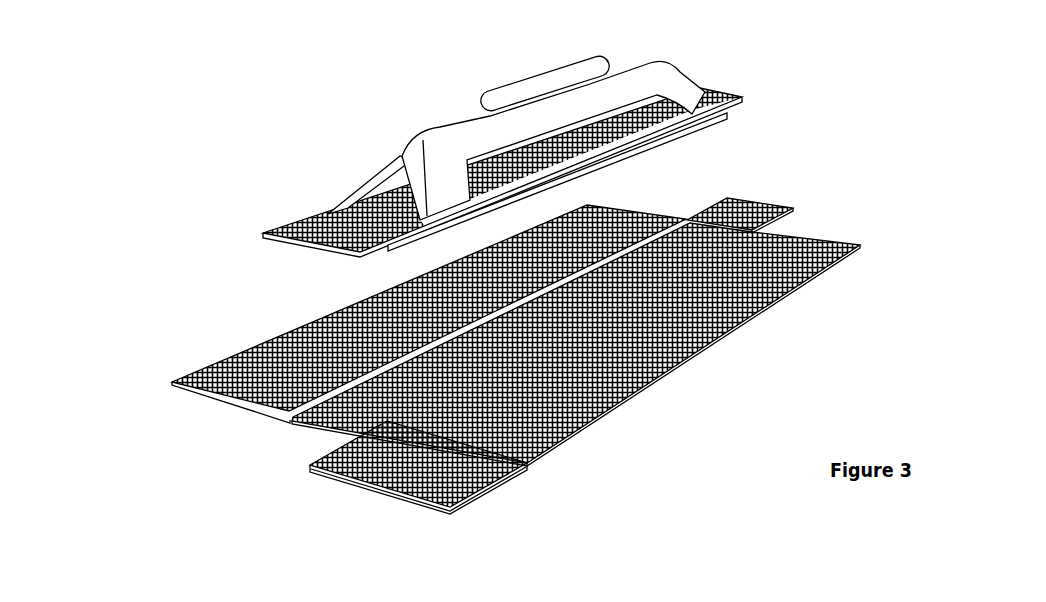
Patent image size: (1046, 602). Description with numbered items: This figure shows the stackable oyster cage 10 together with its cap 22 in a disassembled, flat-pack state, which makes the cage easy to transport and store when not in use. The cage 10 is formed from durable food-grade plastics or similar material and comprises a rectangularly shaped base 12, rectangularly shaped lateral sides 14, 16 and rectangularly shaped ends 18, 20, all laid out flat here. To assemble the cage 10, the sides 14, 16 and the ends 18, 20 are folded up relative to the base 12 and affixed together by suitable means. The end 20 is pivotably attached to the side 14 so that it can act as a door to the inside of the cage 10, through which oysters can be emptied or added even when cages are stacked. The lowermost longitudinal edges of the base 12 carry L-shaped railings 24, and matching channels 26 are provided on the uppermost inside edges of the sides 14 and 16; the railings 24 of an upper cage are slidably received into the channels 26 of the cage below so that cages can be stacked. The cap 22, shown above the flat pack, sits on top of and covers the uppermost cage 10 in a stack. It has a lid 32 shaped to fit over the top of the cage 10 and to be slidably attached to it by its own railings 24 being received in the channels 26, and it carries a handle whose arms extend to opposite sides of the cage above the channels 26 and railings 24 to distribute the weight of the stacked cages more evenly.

The cage 10 is at (134, 98).
The base 12 is at (356, 409).
The lateral side 14 is at (725, 295).
The lateral side 16 is at (258, 385).
The end 18 is at (778, 203).
The end 20 is at (467, 474).
The cap 22 is at (732, 78).
The L-shaped railing 24 is at (733, 120).
The channel 26 is at (236, 348).
The lid 32 is at (343, 219).